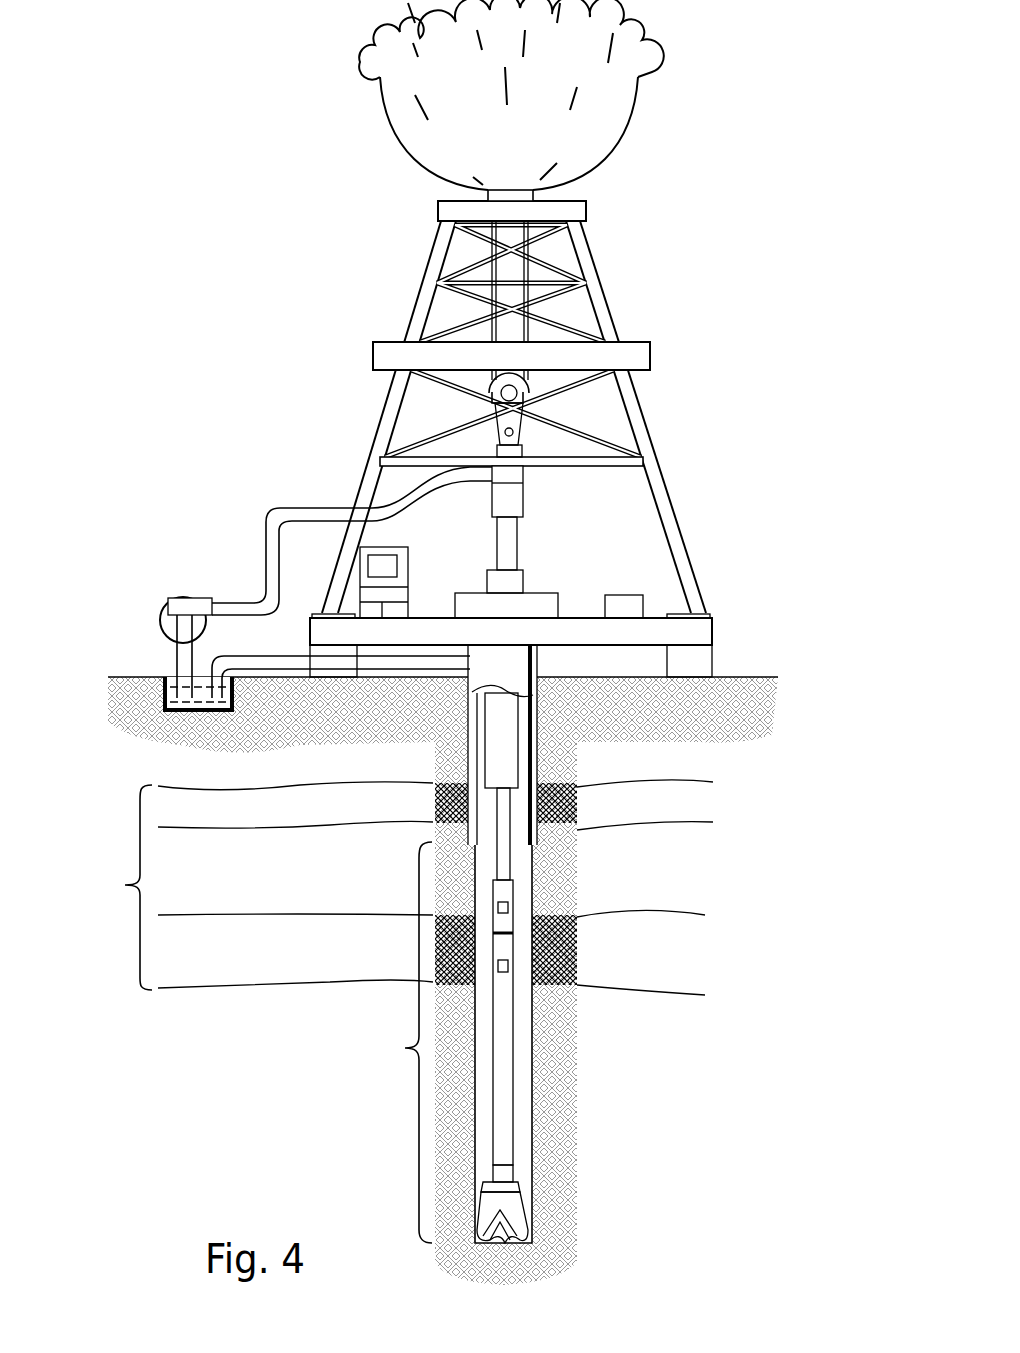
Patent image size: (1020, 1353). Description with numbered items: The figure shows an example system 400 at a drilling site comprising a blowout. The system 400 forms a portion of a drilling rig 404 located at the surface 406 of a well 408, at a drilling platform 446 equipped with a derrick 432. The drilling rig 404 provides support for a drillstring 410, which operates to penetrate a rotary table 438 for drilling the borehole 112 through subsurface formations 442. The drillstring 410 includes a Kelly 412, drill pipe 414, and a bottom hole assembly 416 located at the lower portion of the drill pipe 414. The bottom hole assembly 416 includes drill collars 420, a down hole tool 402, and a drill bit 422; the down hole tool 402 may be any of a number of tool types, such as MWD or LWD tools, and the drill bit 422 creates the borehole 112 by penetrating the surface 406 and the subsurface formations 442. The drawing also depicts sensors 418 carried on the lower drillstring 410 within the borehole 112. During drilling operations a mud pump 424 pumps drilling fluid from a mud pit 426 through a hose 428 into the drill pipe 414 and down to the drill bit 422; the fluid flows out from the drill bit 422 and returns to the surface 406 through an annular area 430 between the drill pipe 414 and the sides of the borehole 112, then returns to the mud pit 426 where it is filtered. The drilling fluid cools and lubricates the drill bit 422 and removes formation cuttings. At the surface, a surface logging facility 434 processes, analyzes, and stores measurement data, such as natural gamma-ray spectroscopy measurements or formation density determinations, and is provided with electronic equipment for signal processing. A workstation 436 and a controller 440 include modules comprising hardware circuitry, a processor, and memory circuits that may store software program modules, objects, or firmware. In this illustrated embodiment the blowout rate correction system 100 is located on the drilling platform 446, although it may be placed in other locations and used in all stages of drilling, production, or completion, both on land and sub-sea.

The system 400 is at (233, 330).
The drilling rig 404 is at (556, 306).
The derrick 432 is at (642, 410).
The Kelly 412 is at (517, 538).
The surface logging facility 434 is at (423, 555).
The workstation 436 is at (410, 569).
The rotary table 438 is at (472, 595).
The controller 440 is at (398, 565).
The blowout rate correction system 100 is at (625, 595).
The drilling platform 446 is at (715, 627).
The surface 406 is at (733, 675).
The well 408 is at (558, 745).
The drill collars 420 is at (518, 752).
The drill pipe 414 is at (505, 825).
The annular area 430 is at (582, 1002).
The sensors 418 is at (508, 967).
The drillstring 410 is at (577, 1015).
The borehole 112 is at (494, 1042).
The down hole tool 402 is at (502, 1148).
The drill bit 422 is at (510, 1202).
The bottom hole assembly 416 is at (442, 1042).
The subsurface formations 442 is at (393, 887).
The mud pump 424 is at (190, 597).
The mud pit 426 is at (185, 707).
The hose 428 is at (292, 507).